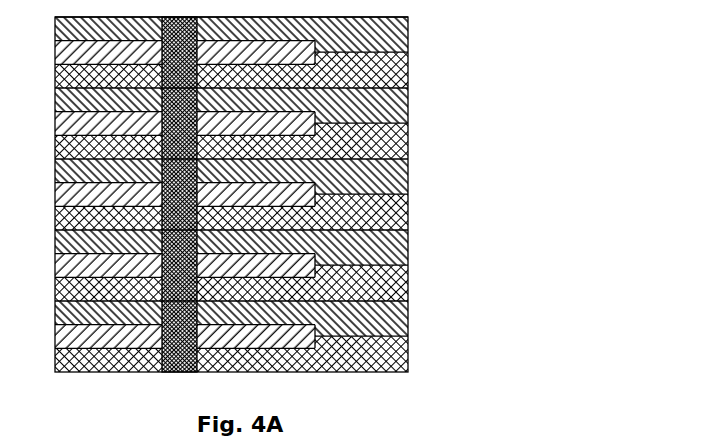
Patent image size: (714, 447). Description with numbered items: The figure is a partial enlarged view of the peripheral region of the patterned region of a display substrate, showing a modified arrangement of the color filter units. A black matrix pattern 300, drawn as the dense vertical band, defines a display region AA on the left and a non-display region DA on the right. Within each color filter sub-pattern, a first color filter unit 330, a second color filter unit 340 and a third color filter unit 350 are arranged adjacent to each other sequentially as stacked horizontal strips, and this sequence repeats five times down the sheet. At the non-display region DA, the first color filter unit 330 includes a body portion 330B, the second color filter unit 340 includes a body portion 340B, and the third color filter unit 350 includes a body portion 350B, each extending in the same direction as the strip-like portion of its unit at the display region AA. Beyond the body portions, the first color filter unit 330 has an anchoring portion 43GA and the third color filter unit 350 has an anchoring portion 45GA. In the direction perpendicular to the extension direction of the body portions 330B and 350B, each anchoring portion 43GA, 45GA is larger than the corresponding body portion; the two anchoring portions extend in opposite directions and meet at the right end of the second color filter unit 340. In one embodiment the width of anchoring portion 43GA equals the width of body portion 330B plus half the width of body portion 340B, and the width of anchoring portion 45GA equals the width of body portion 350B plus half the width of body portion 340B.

The first color filter unit 330 is at (94, 29).
The second color filter unit 340 is at (94, 53).
The third color filter unit 350 is at (94, 76).
The body portion 330B is at (256, 29).
The body portion 340B is at (256, 53).
The body portion 350B is at (256, 76).
The anchoring portion 43GA is at (361, 34).
The anchoring portion 45GA is at (361, 70).
The black matrix pattern 300 is at (179, 194).
The display region AA is at (55, 392).
The non-display region DA is at (408, 392).